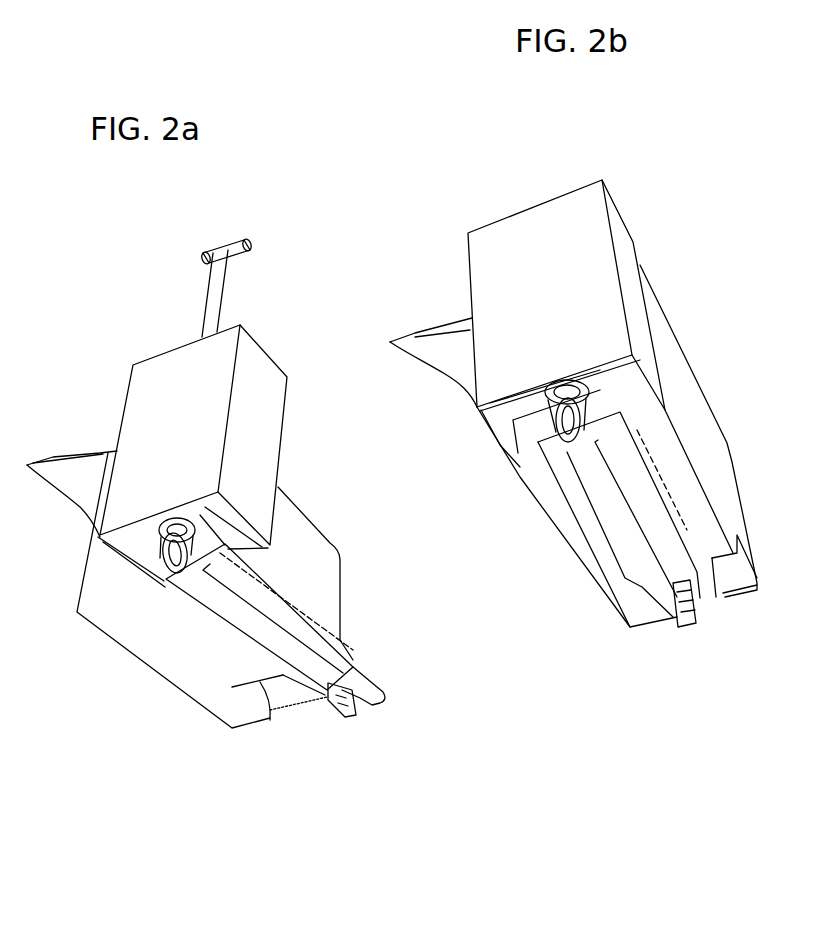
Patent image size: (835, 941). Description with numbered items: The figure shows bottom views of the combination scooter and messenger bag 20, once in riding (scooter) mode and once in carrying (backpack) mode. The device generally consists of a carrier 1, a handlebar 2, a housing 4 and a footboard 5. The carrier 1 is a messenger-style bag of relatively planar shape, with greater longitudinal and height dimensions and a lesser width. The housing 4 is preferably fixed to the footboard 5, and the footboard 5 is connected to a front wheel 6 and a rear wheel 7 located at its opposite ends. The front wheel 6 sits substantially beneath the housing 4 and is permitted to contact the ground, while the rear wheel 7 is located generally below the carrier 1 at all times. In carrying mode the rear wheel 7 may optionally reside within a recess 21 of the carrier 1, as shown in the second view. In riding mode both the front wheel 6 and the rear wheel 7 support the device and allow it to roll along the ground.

In FIG. 2a, the carrier 1 is at (287, 536).
In FIG. 2b, the carrier 1 is at (700, 419).
In FIG. 2a, the handlebar 2 is at (204, 277).
In FIG. 2a, the housing 4 is at (172, 409).
In FIG. 2b, the housing 4 is at (535, 279).
In FIG. 2a, the footboard 5 is at (290, 623).
In FIG. 2b, the footboard 5 is at (648, 547).
In FIG. 2a, the front wheel 6 is at (180, 555).
In FIG. 2b, the front wheel 6 is at (553, 448).
In FIG. 2a, the rear wheel 7 is at (355, 702).
In FIG. 2b, the rear wheel 7 is at (690, 627).
In FIG. 2a, the combination scooter and messenger bag 20 is at (133, 731).
In FIG. 2b, the combination scooter and messenger bag 20 is at (636, 656).
In FIG. 2a, the recess 21 is at (285, 699).
In FIG. 2b, the recess 21 is at (735, 583).